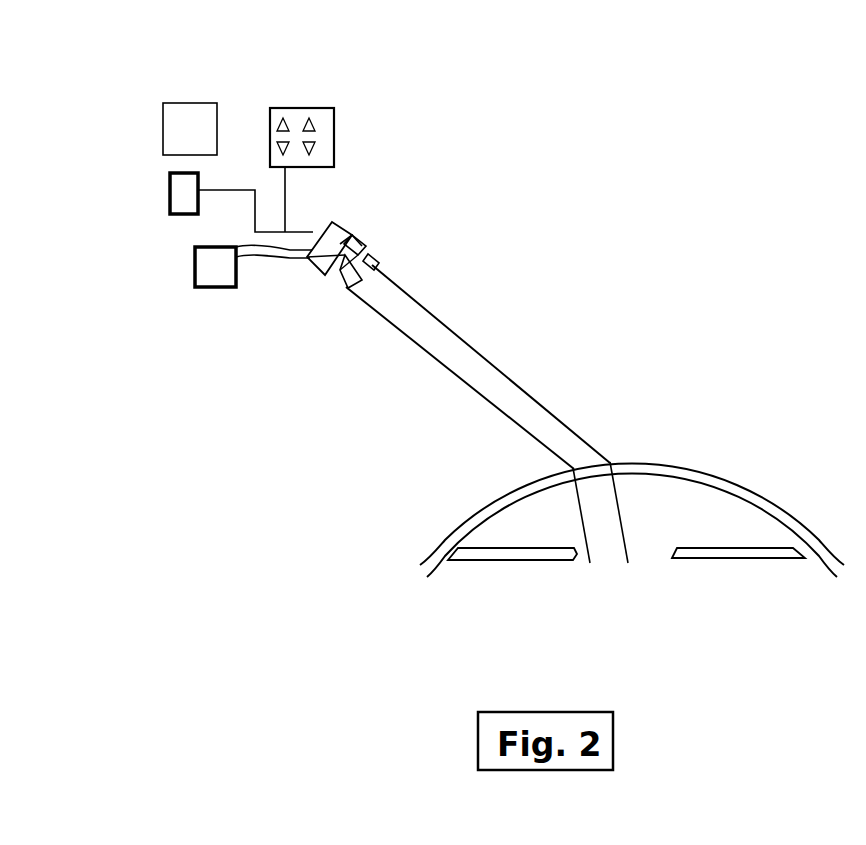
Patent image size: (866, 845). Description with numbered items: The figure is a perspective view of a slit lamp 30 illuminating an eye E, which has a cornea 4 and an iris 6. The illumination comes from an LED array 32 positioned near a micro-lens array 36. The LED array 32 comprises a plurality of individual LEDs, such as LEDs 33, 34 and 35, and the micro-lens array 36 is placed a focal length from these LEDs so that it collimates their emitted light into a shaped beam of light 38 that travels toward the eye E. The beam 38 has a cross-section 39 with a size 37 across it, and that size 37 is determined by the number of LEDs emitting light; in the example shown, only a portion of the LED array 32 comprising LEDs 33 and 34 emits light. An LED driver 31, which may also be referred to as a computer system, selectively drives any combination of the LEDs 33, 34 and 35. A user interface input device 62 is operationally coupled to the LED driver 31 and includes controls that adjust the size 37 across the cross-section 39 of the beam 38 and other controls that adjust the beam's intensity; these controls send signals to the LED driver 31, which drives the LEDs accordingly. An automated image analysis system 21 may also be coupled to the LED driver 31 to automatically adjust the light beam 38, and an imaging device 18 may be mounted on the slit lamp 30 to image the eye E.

The slit lamp 30 is at (100, 68).
The automated image analysis system 21 is at (170, 190).
The imaging device 18 is at (193, 265).
The user interface input device 62 is at (328, 130).
The LED driver 31 is at (340, 237).
The LED 35 is at (350, 237).
The LED array 32 is at (357, 243).
The micro-lens array 36 is at (365, 257).
The LED 34 is at (335, 253).
The LED 33 is at (337, 275).
The size 37 is at (533, 393).
The cross-section 39 is at (493, 442).
The shaped beam of light 38 is at (572, 447).
The eye E is at (765, 460).
The cornea 4 is at (755, 500).
The iris 6 is at (742, 553).